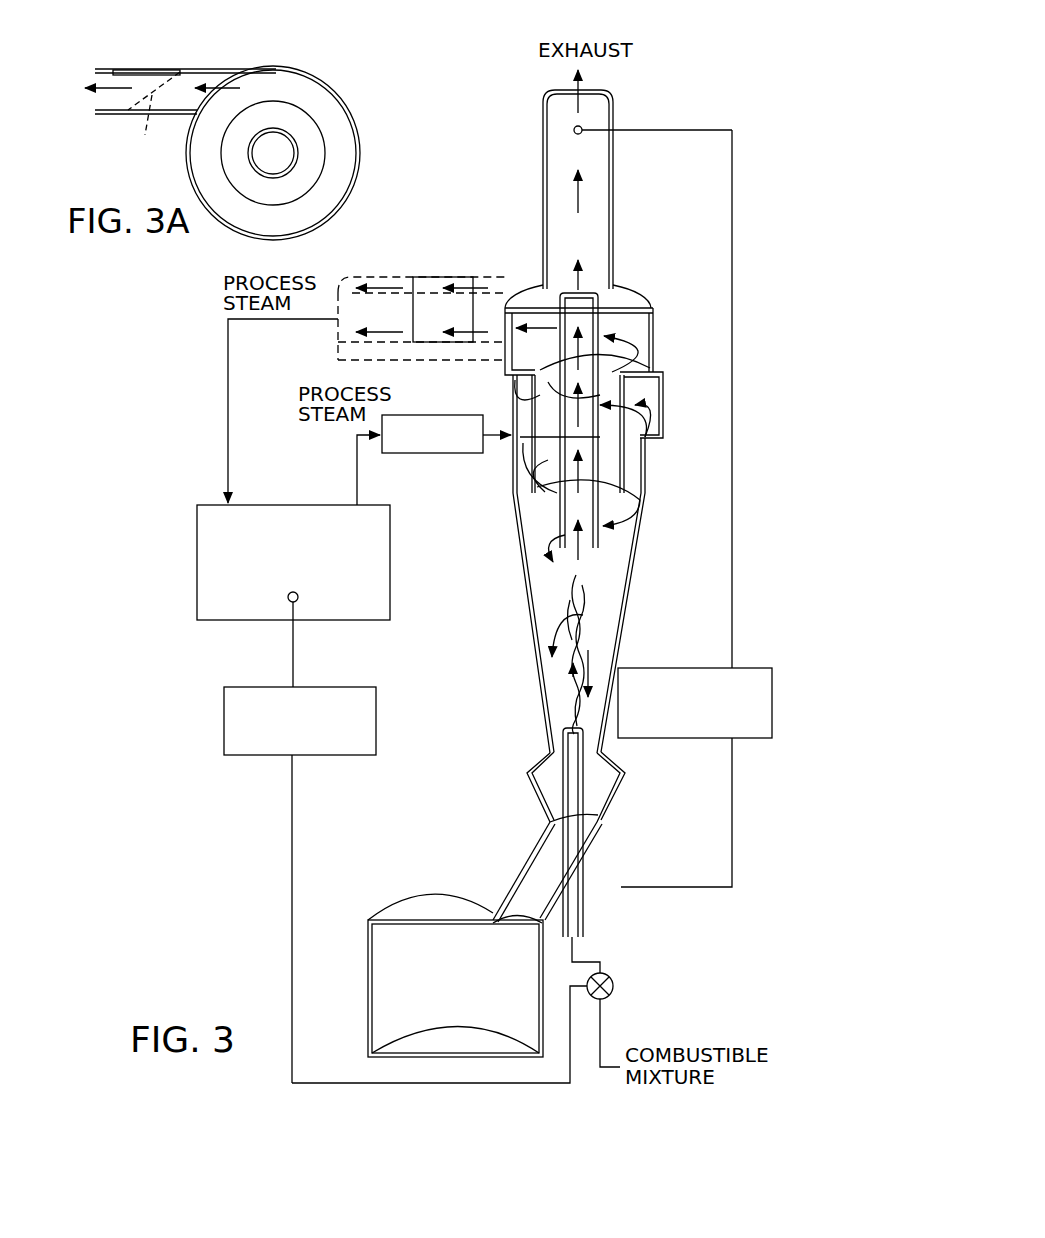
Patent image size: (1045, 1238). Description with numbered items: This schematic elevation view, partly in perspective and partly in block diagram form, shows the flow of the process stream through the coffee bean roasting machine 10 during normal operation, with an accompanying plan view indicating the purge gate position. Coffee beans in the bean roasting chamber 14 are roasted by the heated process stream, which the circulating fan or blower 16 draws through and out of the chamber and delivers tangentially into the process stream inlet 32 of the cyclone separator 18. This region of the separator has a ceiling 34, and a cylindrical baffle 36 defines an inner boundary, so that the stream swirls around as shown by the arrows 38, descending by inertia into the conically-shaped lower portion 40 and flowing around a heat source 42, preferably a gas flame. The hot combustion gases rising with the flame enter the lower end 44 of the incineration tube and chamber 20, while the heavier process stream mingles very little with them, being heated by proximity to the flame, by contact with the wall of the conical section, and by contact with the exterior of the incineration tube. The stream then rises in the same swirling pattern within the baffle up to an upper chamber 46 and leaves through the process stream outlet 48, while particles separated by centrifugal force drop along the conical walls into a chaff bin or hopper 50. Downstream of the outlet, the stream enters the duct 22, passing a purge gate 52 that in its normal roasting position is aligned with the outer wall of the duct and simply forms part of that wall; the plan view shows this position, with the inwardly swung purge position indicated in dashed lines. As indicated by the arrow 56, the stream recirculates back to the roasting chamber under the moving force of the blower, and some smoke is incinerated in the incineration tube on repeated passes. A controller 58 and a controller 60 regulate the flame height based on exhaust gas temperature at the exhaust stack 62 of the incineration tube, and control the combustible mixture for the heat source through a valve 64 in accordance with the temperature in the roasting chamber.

In FIG. 3, the machine 10 is at (745, 220).
In FIG. 3, the bean roasting chamber 14 is at (197, 558).
In FIG. 3, the circulating fan or blower 16 is at (432, 453).
In FIG. 3, the cyclone separator 18 is at (678, 369).
In FIG. 3, the incineration tube and chamber 20 is at (600, 447).
In FIG. 3A, the duct 22 is at (97, 70).
In FIG. 3, the duct 22 is at (388, 275).
In FIG. 3, the process stream inlet 32 is at (653, 415).
In FIG. 3, the ceiling 34 is at (640, 380).
In FIG. 3, the cylindrical baffle 36 is at (530, 392).
In FIG. 3, the arrows 38 is at (640, 507).
In FIG. 3, the conically-shaped lower portion 40 is at (623, 598).
In FIG. 3, the heat source 42 is at (583, 620).
In FIG. 3, the lower end 44 is at (598, 548).
In FIG. 3A, the upper chamber 46 is at (205, 78).
In FIG. 3, the upper chamber 46 is at (637, 322).
In FIG. 3A, the process stream outlet 48 is at (233, 70).
In FIG. 3, the process stream outlet 48 is at (508, 280).
In FIG. 3, the chaff bin or hopper 50 is at (370, 972).
In FIG. 3A, the purge gate 52 is at (148, 70).
In FIG. 3, the purge gate 52 is at (440, 281).
In FIG. 3, the arrow 56 is at (228, 432).
In FIG. 3, the controller 58 is at (747, 668).
In FIG. 3, the controller 60 is at (224, 703).
In FIG. 3, the exhaust stack 62 is at (598, 100).
In FIG. 3, the valve 64 is at (616, 985).